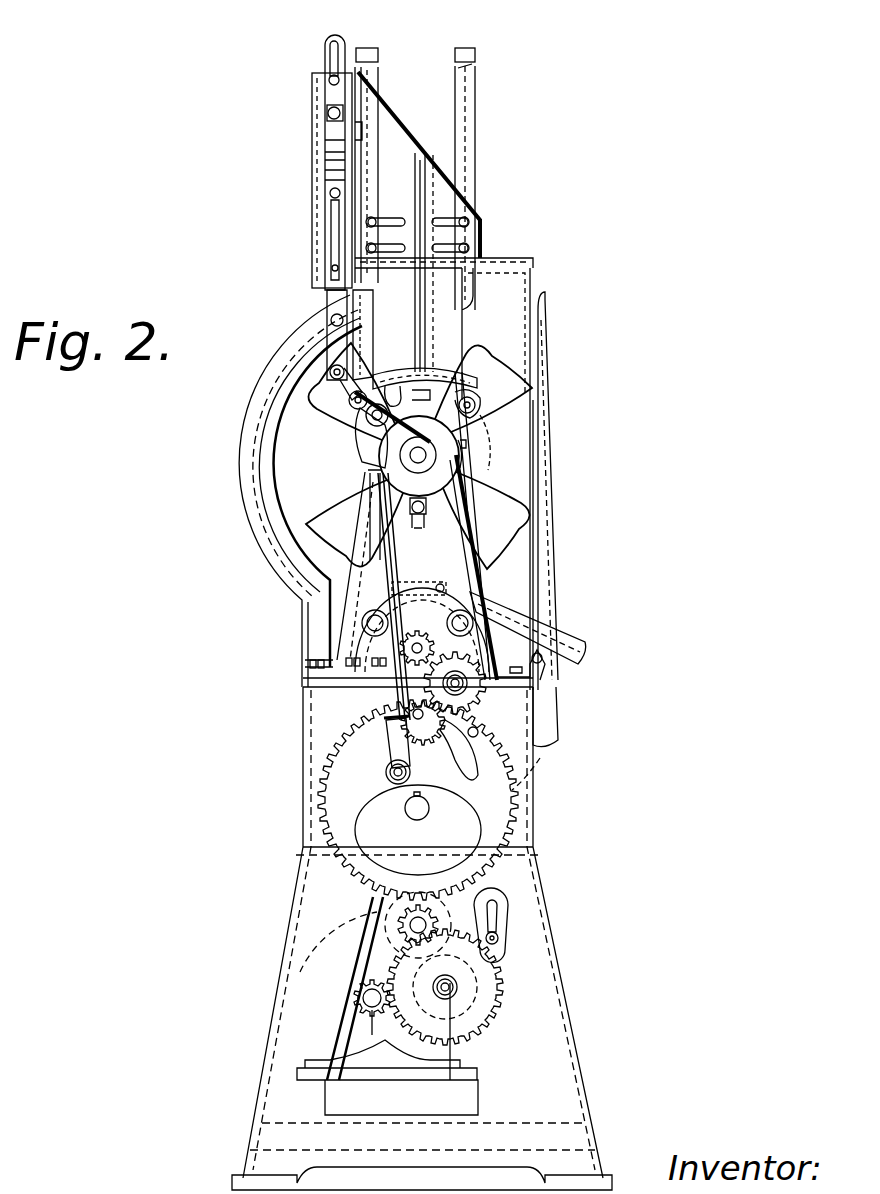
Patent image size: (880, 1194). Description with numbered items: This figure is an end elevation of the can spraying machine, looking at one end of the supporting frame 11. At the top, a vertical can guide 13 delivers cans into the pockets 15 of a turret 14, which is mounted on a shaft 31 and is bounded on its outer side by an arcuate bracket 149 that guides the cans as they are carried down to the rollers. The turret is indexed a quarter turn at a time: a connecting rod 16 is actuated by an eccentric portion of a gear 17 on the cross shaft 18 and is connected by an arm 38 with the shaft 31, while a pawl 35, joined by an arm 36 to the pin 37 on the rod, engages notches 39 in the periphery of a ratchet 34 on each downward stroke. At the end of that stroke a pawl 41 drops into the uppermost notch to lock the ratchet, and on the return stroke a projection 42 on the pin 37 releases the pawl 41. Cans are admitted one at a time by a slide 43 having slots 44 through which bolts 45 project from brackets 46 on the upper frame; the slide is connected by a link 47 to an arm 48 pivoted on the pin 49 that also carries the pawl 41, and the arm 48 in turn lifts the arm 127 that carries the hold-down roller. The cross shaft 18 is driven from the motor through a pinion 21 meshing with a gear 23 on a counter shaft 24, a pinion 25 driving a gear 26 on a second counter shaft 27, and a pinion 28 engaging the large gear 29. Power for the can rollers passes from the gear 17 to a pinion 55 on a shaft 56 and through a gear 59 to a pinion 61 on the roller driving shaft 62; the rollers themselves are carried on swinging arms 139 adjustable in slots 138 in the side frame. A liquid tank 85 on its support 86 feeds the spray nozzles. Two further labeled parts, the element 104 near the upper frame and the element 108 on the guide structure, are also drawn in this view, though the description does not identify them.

The supporting frame 11 is at (546, 918).
The can guide 13 is at (466, 124).
The turret 14 is at (507, 375).
The pocket 15 is at (445, 456).
The connecting rod 16 is at (378, 512).
The gear 17 is at (467, 816).
The cross shaft 18 is at (422, 807).
The pinion 21 is at (375, 1020).
The gear 23 is at (482, 978).
The counter shaft 24 is at (456, 1000).
The pinion 25 is at (507, 952).
The gear 26 is at (372, 912).
The second counter shaft 27 is at (405, 928).
The pinion 28 is at (352, 928).
The large gear 29 is at (545, 760).
The shaft 31 is at (427, 456).
The ratchet 34 is at (462, 448).
The pawl 35 is at (368, 436).
The arm 36 is at (350, 406).
The pin 37 is at (402, 424).
The arm 38 is at (417, 493).
The notch 39 is at (413, 520).
The pawl 41 is at (436, 376).
The projection 42 is at (395, 385).
The slide 43 is at (330, 208).
The slot 44 is at (332, 57).
The bolt 45 is at (330, 82).
The bracket 46 is at (316, 115).
The link 47 is at (333, 340).
The arm 48 is at (354, 370).
The pin 49 is at (472, 404).
The pinion 55 is at (432, 752).
The shaft 56 is at (396, 738).
The gear 59 is at (470, 688).
The pinion 61 is at (402, 660).
The roller driving shaft 62 is at (478, 622).
The liquid tank 85 is at (500, 294).
The support 86 is at (548, 528).
The lever 104 is at (565, 652).
The slot 108 is at (442, 222).
The arm 127 is at (482, 226).
The slot 138 is at (448, 600).
The swinging arm 139 is at (338, 690).
The arcuate bracket 149 is at (250, 515).